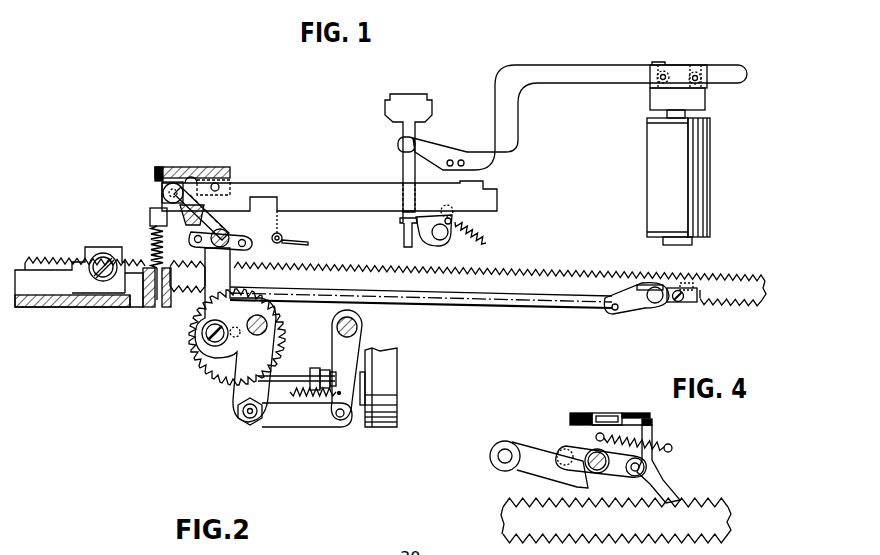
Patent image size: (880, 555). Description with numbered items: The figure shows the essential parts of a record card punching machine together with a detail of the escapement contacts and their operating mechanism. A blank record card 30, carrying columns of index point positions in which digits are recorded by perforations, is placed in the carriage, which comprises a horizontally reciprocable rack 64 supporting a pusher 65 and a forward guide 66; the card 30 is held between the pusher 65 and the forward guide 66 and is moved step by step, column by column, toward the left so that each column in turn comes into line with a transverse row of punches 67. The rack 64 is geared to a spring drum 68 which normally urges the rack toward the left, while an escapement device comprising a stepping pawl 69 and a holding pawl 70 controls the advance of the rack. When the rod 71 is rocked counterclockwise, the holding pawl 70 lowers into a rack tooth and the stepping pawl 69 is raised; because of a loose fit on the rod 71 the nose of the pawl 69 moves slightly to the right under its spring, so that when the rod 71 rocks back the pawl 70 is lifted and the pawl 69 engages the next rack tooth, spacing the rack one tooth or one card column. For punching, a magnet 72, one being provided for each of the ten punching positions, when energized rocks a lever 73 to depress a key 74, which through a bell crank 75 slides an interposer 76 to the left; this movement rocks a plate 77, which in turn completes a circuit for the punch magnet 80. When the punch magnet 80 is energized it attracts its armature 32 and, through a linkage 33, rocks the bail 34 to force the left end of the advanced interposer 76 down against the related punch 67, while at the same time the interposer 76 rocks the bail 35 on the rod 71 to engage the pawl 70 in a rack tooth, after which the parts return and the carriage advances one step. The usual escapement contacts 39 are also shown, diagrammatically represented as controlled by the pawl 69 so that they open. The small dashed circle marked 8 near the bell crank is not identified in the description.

In FIG. 1, the pin 8 is at (447, 212).
In FIG. 1, the record card 30 is at (521, 303).
In FIG. 1, the armature 32 is at (340, 358).
In FIG. 1, the linkage 33 is at (213, 312).
In FIG. 1, the bail 34 is at (183, 166).
In FIG. 1, the bail 35 is at (185, 222).
In FIG. 4, the escapement contacts 39 is at (636, 413).
In FIG. 1, the rack 64 is at (533, 272).
In FIG. 4, the rack 64 is at (512, 512).
In FIG. 1, the pusher 65 is at (640, 308).
In FIG. 1, the forward guide 66 is at (137, 300).
In FIG. 1, the punches 67 is at (150, 219).
In FIG. 1, the spring drum 68 is at (202, 360).
In FIG. 4, the stepping pawl 69 is at (667, 482).
In FIG. 4, the holding pawl 70 is at (516, 445).
In FIG. 1, the rod 71 is at (227, 236).
In FIG. 4, the rod 71 is at (590, 458).
In FIG. 1, the magnet 72 is at (657, 157).
In FIG. 1, the lever 73 is at (590, 80).
In FIG. 1, the key 74 is at (401, 165).
In FIG. 1, the bell crank 75 is at (450, 238).
In FIG. 1, the interposer 76 is at (250, 188).
In FIG. 1, the plate 77 is at (283, 225).
In FIG. 1, the punch magnet 80 is at (385, 352).